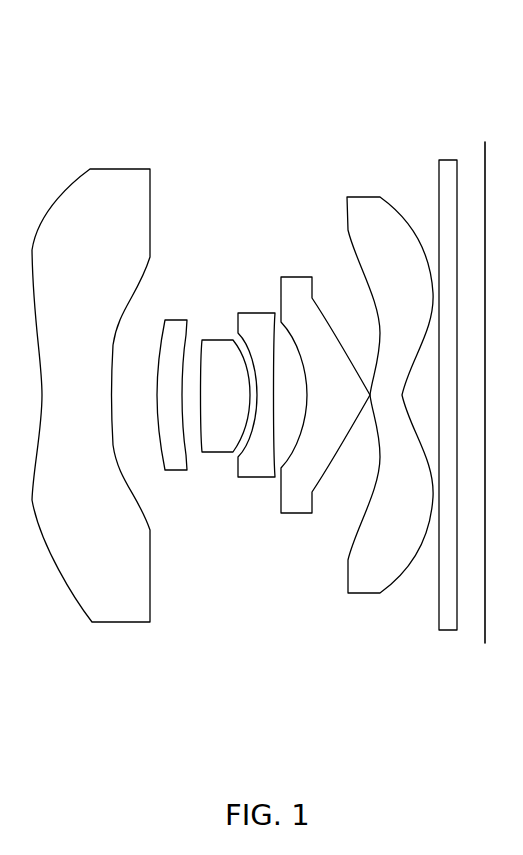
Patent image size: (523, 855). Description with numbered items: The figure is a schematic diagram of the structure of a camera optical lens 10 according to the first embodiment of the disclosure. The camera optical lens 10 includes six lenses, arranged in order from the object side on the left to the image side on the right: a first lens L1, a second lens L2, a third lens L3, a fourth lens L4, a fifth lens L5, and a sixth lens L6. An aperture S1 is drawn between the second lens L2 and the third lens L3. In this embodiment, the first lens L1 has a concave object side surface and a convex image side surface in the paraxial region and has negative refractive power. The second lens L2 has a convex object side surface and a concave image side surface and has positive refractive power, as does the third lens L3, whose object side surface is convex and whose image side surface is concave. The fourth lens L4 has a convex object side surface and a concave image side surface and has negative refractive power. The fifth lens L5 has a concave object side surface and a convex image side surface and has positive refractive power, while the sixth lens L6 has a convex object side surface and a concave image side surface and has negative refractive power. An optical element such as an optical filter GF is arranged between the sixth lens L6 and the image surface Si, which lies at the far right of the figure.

The camera optical lens 10 is at (288, 35).
The first lens L1 is at (91, 384).
The second lens L2 is at (172, 381).
The aperture S1 is at (200, 323).
The third lens L3 is at (226, 382).
The fourth lens L4 is at (256, 381).
The fifth lens L5 is at (325, 382).
The sixth lens L6 is at (390, 382).
The optical filter GF is at (442, 384).
The image surface Si is at (477, 383).